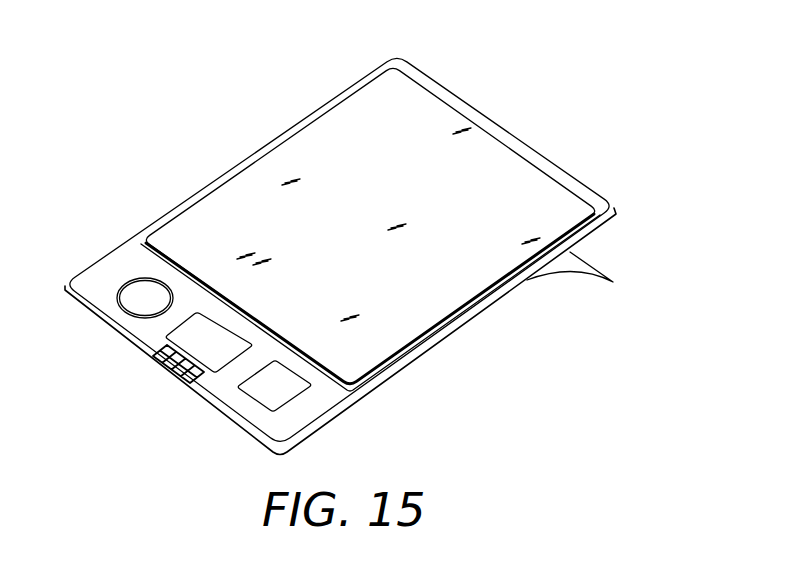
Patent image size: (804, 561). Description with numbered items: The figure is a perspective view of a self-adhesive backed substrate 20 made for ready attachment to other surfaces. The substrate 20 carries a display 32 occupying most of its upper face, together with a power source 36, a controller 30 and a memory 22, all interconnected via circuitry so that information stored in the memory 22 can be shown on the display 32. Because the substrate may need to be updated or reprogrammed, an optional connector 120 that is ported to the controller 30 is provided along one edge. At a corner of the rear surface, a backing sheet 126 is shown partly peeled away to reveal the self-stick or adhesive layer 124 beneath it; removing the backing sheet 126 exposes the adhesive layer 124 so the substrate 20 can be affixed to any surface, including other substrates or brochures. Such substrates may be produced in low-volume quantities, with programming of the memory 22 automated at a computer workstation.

The display 32 is at (342, 123).
The power source 36 is at (137, 290).
The controller 30 is at (208, 323).
The memory 22 is at (262, 397).
The connector 120 is at (155, 375).
The self-adhesive backed substrate 20 is at (203, 392).
The adhesive layer 124 is at (580, 248).
The backing sheet 126 is at (582, 277).